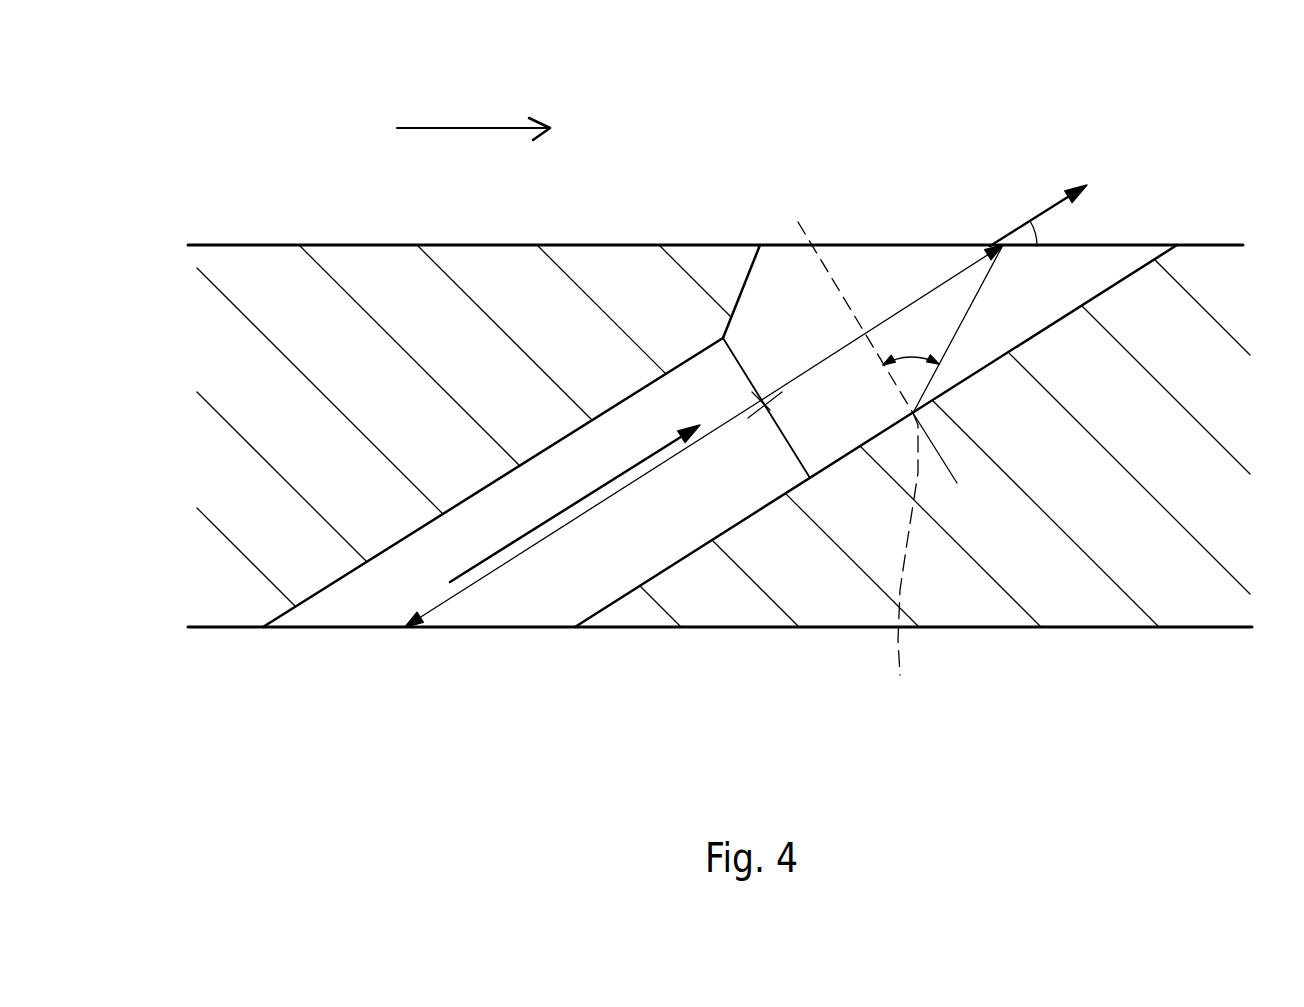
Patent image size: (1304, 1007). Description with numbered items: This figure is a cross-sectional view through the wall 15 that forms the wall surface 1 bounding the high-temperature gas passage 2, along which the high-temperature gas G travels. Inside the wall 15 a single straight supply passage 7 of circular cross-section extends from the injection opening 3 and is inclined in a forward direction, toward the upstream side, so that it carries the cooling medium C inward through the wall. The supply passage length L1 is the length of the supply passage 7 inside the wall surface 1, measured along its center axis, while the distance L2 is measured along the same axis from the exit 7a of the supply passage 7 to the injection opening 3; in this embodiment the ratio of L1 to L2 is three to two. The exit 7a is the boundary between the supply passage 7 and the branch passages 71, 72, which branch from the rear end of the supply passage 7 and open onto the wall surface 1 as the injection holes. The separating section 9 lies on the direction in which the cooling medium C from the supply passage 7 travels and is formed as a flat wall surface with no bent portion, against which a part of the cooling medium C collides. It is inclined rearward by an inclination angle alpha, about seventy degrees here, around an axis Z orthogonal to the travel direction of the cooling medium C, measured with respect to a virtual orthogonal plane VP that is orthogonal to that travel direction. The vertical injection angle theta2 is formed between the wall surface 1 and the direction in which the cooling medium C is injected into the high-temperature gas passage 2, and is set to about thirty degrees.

The high-temperature gas passage 2 is at (318, 88).
The wall surface 1 is at (360, 245).
The wall 15 is at (565, 310).
The injection opening 3 is at (777, 245).
The supply passage 7 is at (547, 600).
The exit 7a is at (797, 447).
The branch passage 72 is at (761, 152).
The branch passage 71 is at (792, 273).
The separating section 9 is at (968, 318).
The virtual orthogonal plane VP is at (838, 298).
The supply passage length L1 is at (468, 592).
The distance between supply passage and injection opening L2 is at (890, 317).
The inclination angle alpha is at (920, 352).
The vertical injection angle theta2 is at (1038, 237).
The cooling medium C is at (582, 499).
The axis Z is at (906, 563).
The high-temperature gas G is at (480, 128).